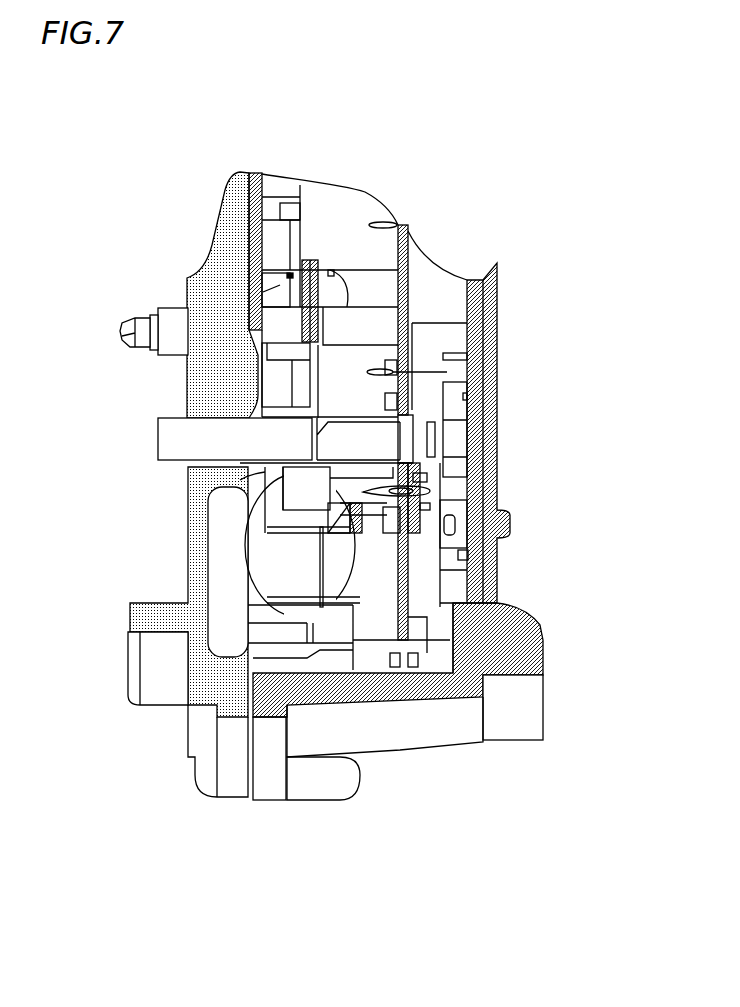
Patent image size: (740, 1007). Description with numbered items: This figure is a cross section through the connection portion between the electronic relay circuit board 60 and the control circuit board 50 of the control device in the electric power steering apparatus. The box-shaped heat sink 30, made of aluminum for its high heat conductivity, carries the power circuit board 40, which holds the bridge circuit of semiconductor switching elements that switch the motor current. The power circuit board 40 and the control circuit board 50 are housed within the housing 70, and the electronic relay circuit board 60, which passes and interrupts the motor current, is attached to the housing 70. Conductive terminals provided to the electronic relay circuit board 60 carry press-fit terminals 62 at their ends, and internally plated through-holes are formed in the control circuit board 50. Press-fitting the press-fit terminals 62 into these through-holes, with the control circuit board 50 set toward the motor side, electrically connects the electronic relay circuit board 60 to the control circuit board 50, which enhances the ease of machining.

The heat sink 30 is at (222, 226).
The power circuit board 40 is at (256, 173).
The control circuit board 50 is at (408, 236).
The electronic relay circuit board 60 is at (478, 585).
The press-fit terminals 62 is at (430, 490).
The housing 70 is at (388, 680).